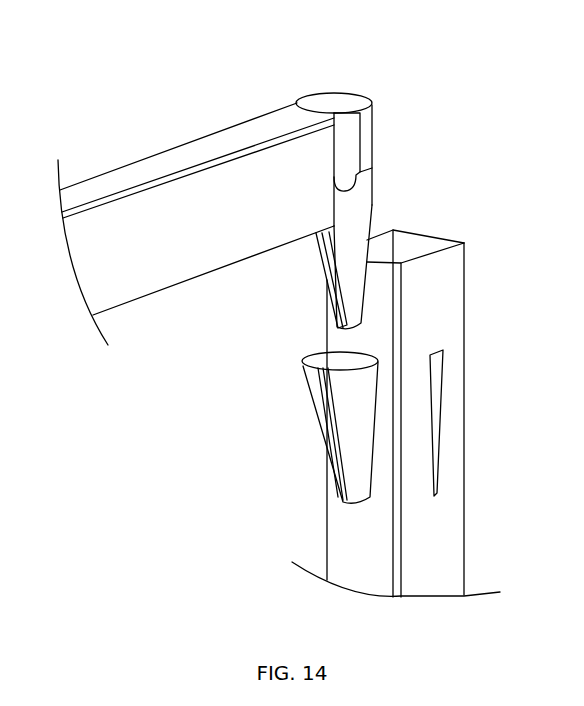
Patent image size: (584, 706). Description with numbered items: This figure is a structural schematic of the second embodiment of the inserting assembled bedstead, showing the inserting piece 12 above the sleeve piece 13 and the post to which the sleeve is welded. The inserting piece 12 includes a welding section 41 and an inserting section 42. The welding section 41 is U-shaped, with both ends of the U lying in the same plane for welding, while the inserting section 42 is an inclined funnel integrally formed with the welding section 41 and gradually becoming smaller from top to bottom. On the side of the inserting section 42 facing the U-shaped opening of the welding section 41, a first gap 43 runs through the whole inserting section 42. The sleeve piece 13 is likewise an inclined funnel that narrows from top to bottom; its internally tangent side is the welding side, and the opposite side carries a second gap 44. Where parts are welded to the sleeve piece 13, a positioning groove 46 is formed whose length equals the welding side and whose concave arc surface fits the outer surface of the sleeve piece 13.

The inserting piece 12 is at (400, 202).
The welding section 41 is at (373, 117).
The inserting section 42 is at (395, 238).
The first gap 43 is at (315, 262).
The second gap 44 is at (323, 412).
The sleeve piece 13 is at (357, 437).
The positioning groove 46 is at (443, 388).